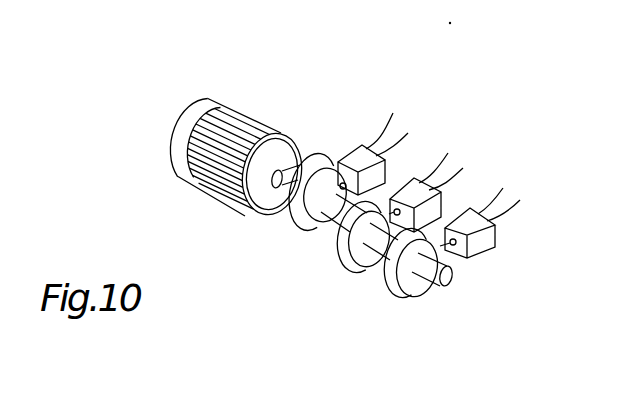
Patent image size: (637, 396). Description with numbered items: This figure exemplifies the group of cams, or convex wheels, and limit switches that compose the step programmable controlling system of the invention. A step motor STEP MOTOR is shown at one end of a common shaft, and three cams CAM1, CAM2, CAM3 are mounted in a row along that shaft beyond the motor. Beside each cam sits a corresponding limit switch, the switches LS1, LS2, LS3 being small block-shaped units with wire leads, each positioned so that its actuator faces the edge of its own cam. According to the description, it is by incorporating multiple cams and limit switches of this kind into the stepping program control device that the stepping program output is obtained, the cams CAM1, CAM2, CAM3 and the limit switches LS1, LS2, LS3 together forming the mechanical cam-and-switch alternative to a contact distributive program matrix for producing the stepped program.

The step motor STEP MOTOR is at (197, 114).
The cam CAM1 is at (298, 238).
The cam CAM2 is at (342, 256).
The cam CAM3 is at (390, 290).
The limit switch LS1 is at (413, 148).
The limit switch LS2 is at (440, 170).
The limit switch LS3 is at (482, 207).